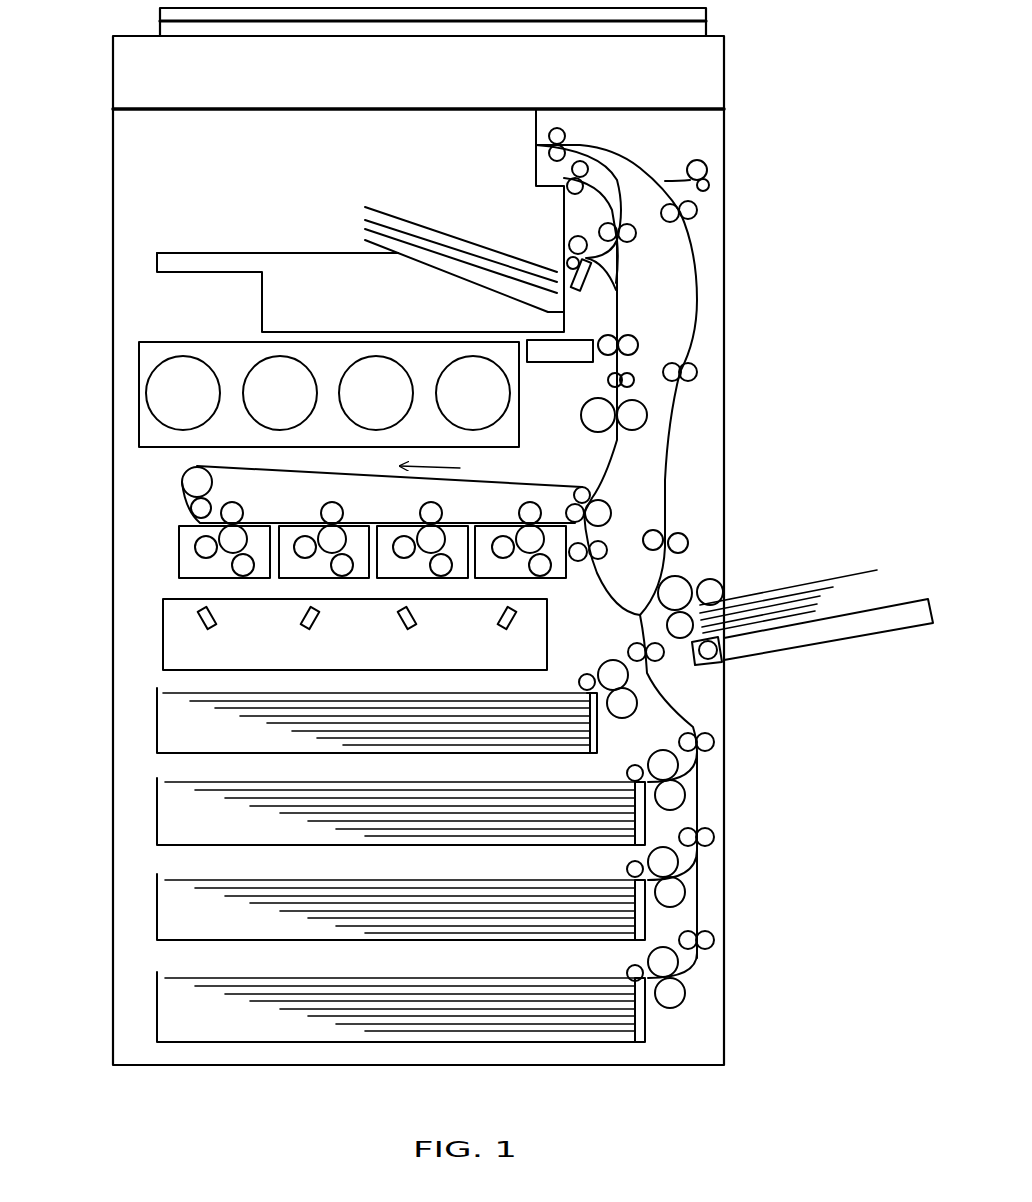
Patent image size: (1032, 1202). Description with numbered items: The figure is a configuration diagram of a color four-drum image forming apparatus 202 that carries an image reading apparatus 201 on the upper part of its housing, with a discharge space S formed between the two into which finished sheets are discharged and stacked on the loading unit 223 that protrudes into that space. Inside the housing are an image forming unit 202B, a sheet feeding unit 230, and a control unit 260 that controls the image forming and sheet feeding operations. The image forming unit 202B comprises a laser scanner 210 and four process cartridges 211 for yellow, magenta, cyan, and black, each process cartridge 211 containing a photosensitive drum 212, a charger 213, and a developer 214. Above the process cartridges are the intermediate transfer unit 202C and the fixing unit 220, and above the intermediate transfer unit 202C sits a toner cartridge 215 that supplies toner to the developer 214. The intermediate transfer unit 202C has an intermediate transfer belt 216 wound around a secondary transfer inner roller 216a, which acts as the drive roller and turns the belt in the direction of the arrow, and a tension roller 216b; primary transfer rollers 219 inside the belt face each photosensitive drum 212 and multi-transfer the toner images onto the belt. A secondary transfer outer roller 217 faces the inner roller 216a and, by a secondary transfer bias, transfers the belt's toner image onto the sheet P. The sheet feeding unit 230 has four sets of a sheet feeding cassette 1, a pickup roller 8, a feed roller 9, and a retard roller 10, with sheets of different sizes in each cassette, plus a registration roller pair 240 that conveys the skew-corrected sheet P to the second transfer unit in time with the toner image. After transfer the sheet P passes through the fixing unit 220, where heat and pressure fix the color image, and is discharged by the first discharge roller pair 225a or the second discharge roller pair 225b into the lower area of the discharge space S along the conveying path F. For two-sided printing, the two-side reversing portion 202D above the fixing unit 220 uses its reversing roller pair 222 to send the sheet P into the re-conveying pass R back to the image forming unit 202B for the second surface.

The image reading apparatus 201 is at (112, 62).
The discharge space S is at (140, 183).
The image forming apparatus 202 is at (112, 240).
The loading unit 223 is at (290, 265).
The reversing roller pair 222 is at (558, 127).
The first discharge roller pair 225a is at (567, 235).
The second discharge roller pair 225b is at (580, 157).
The two-side reversing portion 202D is at (700, 142).
The sheet conveying path F is at (620, 305).
The re-conveying pass R is at (698, 318).
The control unit 260 is at (600, 330).
The fixing unit 220 is at (648, 420).
The intermediate transfer unit 202C is at (533, 467).
The intermediate transfer belt 216 is at (540, 483).
The secondary transfer inner roller 216a is at (592, 497).
The tension roller 216b is at (192, 482).
The secondary transfer outer roller 217 is at (613, 512).
The registration roller pair 240 is at (605, 550).
The toner cartridge 215 is at (139, 393).
The image forming unit 202B is at (153, 513).
The photosensitive drum 212 is at (255, 524).
The primary transfer roller 219 is at (447, 511).
The process cartridge 211 is at (180, 563).
The developer 214 is at (195, 547).
The charger 213 is at (240, 568).
The laser scanner 210 is at (163, 622).
The sheet feeding unit 230 is at (138, 686).
The sheet feeding cassette 1 is at (157, 716).
The sheet P is at (548, 690).
The pickup roller 8 is at (583, 673).
The feed roller 9 is at (610, 667).
The retard roller 10 is at (637, 707).